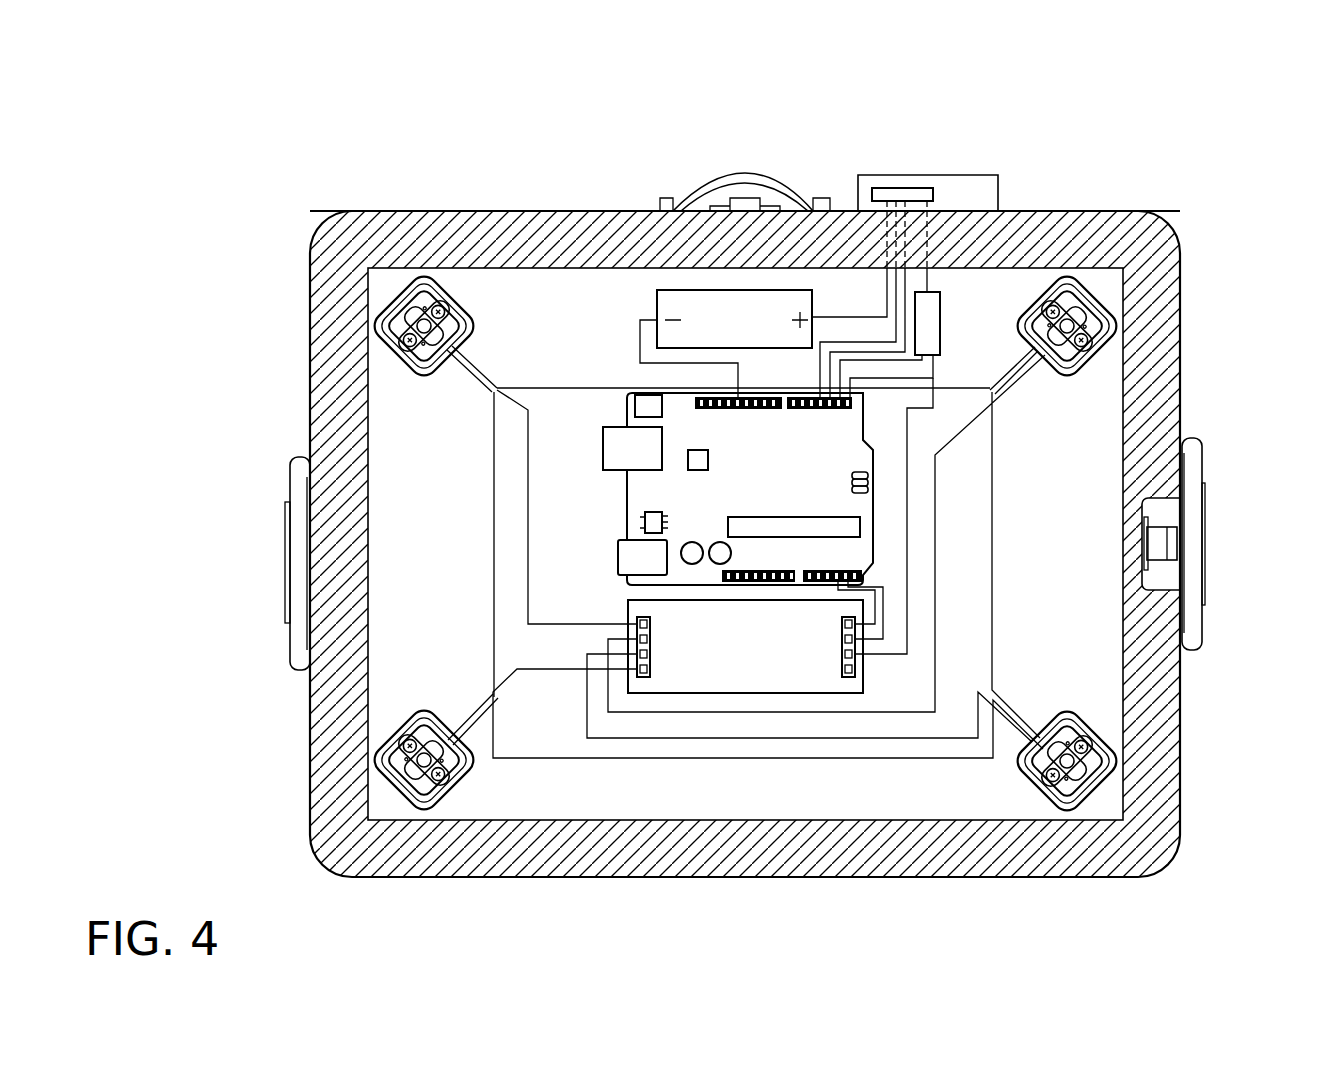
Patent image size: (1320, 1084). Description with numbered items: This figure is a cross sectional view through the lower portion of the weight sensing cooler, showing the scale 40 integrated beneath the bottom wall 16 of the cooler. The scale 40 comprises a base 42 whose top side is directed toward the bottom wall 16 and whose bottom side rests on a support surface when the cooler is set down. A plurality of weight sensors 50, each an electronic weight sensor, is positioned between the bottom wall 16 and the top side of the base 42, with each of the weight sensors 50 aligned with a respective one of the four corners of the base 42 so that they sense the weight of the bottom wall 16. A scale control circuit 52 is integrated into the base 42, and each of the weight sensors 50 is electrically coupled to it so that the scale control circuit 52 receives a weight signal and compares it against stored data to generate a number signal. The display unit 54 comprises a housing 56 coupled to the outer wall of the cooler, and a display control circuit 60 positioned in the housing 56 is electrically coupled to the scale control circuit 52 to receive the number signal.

The bottom wall 16 is at (561, 313).
The scale 40 is at (1050, 384).
The base 42 is at (1128, 211).
The weight sensors 50 is at (418, 290).
The scale control circuit 52 is at (798, 395).
The display unit 54 is at (968, 154).
The housing 56 is at (1000, 178).
The display control circuit 60 is at (902, 188).